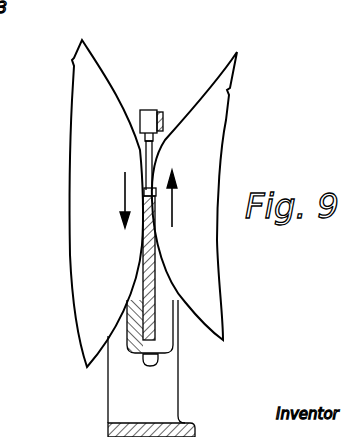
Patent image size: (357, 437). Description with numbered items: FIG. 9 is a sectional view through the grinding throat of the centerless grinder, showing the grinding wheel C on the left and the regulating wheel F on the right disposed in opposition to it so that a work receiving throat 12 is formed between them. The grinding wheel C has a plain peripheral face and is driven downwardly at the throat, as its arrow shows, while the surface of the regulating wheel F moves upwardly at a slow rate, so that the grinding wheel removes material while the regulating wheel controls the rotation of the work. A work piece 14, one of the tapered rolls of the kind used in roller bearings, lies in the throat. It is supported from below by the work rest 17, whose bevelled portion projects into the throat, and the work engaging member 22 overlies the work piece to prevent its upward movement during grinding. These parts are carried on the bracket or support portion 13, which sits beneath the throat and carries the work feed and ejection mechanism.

The grinding wheel C is at (83, 122).
The regulating wheel F is at (214, 264).
The work receiving throat 12 is at (131, 132).
The work engaging member 22 is at (151, 160).
The work pieces 14 is at (153, 192).
The work rest 17 is at (131, 232).
The bracket or support portion 13 is at (155, 388).